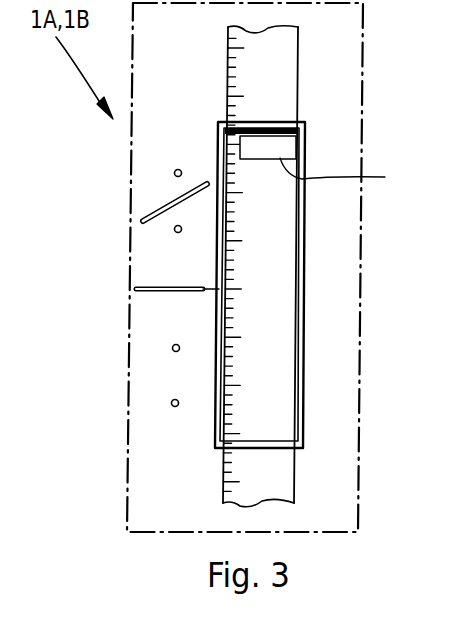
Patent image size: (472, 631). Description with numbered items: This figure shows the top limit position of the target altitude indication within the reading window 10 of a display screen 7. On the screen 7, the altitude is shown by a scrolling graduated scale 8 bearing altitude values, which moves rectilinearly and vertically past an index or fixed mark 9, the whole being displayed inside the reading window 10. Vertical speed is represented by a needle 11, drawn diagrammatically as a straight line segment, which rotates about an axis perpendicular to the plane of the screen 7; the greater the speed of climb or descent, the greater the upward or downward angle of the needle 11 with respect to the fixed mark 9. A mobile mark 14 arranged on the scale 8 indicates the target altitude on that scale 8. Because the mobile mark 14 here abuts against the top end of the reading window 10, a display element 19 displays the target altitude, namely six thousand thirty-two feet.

The display screen 7 is at (361, 312).
The scrolling graduated scale 8 is at (287, 475).
The fixed mark 9 is at (147, 294).
The reading window 10 is at (304, 254).
The needle 11 is at (159, 223).
The mobile mark 14 is at (281, 127).
The display element 19 is at (346, 173).